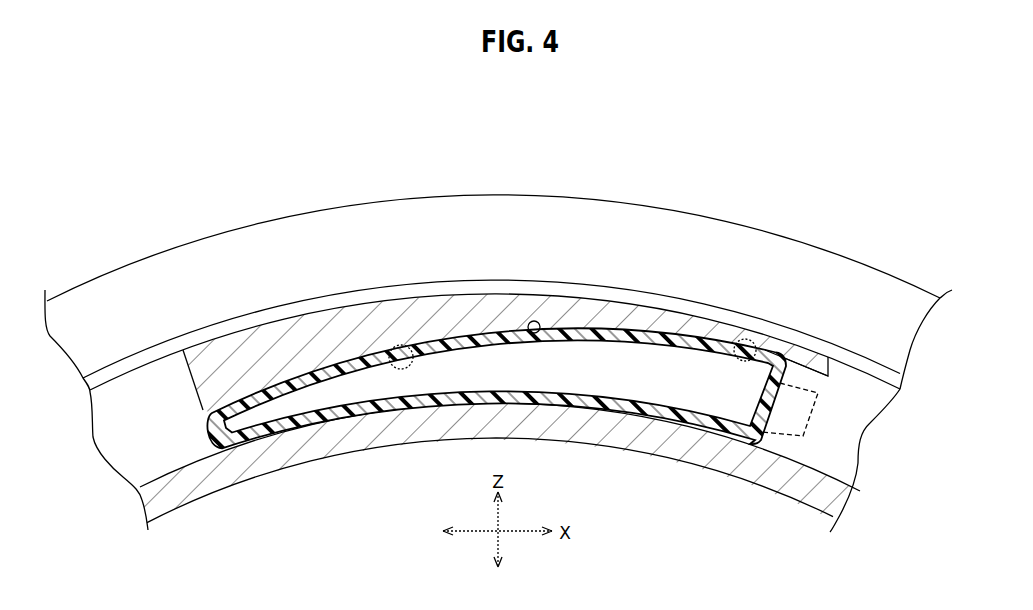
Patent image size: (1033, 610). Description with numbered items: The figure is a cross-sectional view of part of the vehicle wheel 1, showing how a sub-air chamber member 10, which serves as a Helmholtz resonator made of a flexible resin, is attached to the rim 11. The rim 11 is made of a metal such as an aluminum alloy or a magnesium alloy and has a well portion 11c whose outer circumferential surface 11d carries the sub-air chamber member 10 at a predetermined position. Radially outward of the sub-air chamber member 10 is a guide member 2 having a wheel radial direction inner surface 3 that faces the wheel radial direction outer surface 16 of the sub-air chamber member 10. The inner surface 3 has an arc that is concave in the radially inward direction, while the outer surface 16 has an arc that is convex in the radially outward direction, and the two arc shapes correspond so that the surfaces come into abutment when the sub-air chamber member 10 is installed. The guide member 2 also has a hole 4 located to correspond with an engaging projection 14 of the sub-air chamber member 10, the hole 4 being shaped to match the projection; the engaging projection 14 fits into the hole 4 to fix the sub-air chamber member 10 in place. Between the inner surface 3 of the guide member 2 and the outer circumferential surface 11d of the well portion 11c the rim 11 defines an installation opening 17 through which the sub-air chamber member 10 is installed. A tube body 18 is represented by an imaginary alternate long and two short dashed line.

The vehicle wheel 1 is at (735, 203).
The guide member 2 is at (503, 303).
The wheel radial direction inner surface 3 is at (413, 342).
The hole 4 is at (736, 340).
The sub-air chamber member 10 is at (652, 337).
The rim 11 is at (494, 195).
The well portion 11c is at (549, 463).
The outer circumferential surface 11d is at (822, 471).
The engaging projection 14 is at (783, 335).
The wheel radial direction outer surface 16 is at (537, 333).
The installation opening 17 is at (822, 387).
The tube body 18 is at (803, 437).